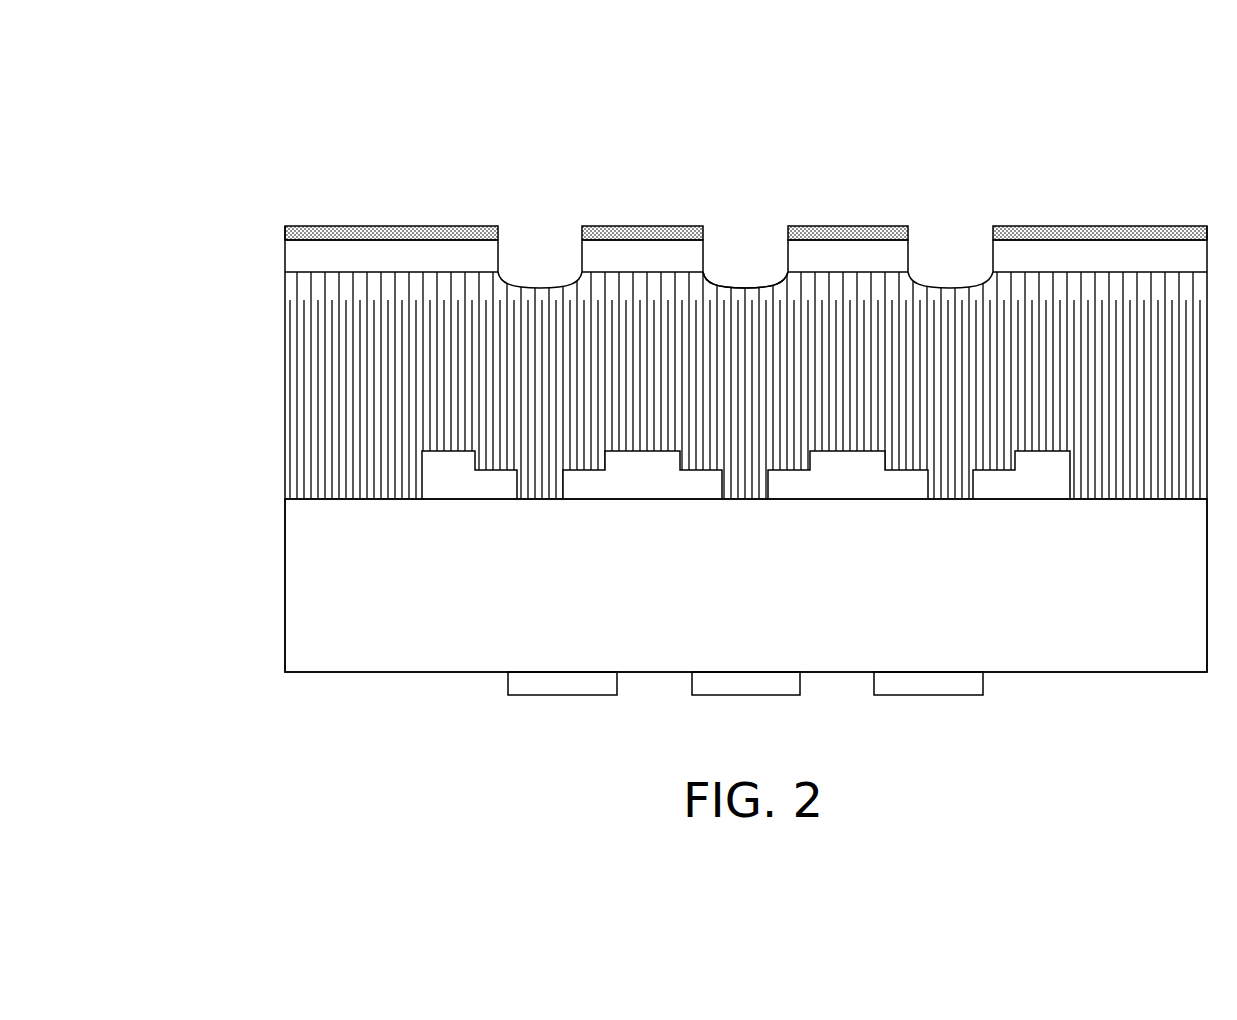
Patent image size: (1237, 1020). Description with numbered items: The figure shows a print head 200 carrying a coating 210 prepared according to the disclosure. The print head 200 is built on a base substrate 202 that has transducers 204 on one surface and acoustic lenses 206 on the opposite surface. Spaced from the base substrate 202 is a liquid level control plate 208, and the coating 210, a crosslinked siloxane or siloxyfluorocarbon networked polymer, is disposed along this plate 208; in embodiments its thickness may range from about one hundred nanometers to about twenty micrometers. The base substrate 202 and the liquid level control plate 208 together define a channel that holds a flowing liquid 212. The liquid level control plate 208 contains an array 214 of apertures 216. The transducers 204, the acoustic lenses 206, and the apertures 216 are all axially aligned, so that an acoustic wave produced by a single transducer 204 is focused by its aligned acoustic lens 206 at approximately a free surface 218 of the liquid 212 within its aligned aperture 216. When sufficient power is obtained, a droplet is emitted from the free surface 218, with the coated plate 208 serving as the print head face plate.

The print head 200 is at (985, 94).
The base substrate 202 is at (300, 583).
The transducers 204 is at (562, 683).
The acoustic lenses 206 is at (849, 476).
The liquid level control plate 208 is at (300, 256).
The coating 210 is at (391, 225).
The flowing liquid 212 is at (300, 364).
The array 214 is at (738, 134).
The apertures 216 is at (748, 238).
The free surface 218 is at (553, 285).